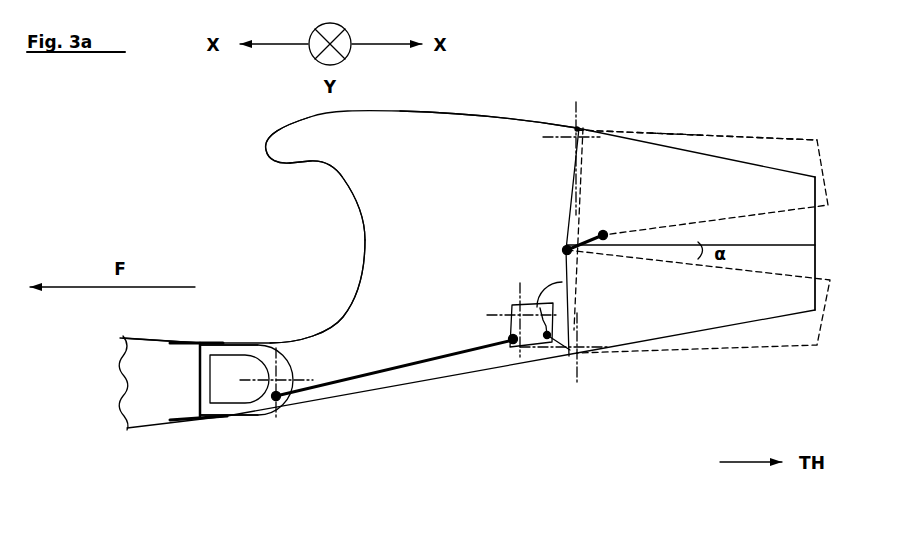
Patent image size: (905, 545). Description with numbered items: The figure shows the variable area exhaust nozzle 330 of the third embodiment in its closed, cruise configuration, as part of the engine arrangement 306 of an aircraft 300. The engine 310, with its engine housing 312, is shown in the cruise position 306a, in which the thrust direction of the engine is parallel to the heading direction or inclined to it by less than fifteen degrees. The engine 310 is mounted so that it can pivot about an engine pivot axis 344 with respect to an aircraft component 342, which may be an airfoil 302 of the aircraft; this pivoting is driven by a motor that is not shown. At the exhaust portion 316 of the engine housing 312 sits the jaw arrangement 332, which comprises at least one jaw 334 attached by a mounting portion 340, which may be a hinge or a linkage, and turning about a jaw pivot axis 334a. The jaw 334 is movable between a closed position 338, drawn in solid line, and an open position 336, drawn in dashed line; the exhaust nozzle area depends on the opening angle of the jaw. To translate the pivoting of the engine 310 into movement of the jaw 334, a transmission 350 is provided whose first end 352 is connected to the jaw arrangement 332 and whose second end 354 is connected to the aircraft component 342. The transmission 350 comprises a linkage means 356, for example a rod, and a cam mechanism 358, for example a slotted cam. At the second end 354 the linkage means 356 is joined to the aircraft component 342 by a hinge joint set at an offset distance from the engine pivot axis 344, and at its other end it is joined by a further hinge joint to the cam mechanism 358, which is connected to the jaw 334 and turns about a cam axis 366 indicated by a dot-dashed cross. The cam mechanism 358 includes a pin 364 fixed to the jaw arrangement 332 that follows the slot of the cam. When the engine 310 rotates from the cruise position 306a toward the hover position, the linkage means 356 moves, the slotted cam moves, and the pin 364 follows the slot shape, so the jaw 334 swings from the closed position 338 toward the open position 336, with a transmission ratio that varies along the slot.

The aircraft 300 is at (238, 157).
The airfoil 302 is at (134, 372).
The engine arrangement 306 is at (167, 233).
The cruise position 306a is at (232, 196).
The engine 310 is at (288, 268).
The engine housing 312 is at (480, 116).
The exhaust portion 316 is at (560, 158).
The pivot door 330 is at (728, 137).
The jaw arrangement 332 is at (672, 136).
The jaw 334 is at (770, 157).
The jaw pivot axis 334a is at (575, 126).
The open position 336 is at (791, 358).
The closed position 338 is at (823, 244).
The mounting portion 340 is at (538, 282).
The aircraft component 342 is at (151, 410).
The engine pivot axis 344 is at (269, 372).
The transmission 350 is at (492, 359).
The first end 352 is at (526, 303).
The second end 354 is at (268, 406).
The linkage means 356 is at (423, 364).
The cam mechanism 358 is at (531, 350).
The connecting link 364 is at (550, 344).
The cam axis 366 is at (508, 313).